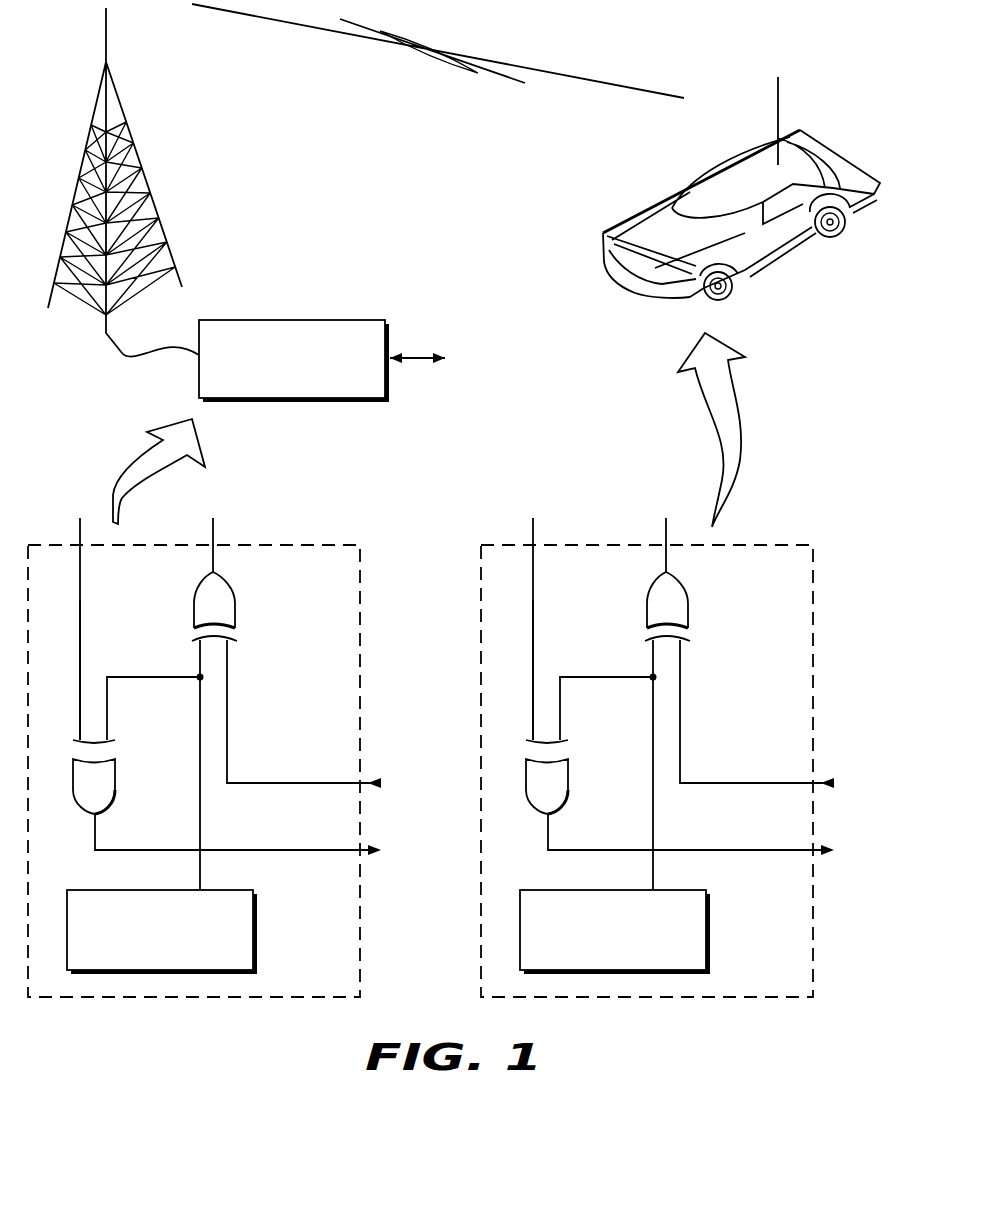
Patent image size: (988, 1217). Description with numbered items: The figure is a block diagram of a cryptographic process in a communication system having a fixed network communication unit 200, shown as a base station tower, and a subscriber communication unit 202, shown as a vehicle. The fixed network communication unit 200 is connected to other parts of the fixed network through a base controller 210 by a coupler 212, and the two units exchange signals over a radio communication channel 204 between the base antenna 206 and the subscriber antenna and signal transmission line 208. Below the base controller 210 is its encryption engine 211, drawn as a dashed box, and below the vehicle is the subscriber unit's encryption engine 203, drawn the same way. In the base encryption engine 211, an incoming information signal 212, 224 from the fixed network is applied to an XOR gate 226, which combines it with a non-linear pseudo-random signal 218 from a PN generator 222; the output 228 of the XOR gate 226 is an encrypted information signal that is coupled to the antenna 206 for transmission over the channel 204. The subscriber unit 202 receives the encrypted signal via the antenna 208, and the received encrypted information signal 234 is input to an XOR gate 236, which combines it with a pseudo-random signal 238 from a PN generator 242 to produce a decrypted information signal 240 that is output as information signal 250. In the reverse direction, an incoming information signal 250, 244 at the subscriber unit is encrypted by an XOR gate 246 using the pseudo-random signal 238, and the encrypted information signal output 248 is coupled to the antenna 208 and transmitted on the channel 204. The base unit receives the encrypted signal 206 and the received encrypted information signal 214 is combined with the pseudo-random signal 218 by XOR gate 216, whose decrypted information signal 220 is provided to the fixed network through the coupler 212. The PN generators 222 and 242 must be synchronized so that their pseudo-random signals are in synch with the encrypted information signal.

The fixed network communication unit 200 is at (168, 136).
The subscriber communication unit 202 is at (697, 176).
The encryption engine 203 is at (813, 614).
The radio communication channel 204 is at (568, 68).
The antenna 206 is at (106, 62).
The antenna and signal transmission line 208 is at (776, 113).
The base controller 210 is at (253, 320).
The encryption engine 211 is at (360, 614).
The coupler 212 is at (415, 350).
The received encrypted information signal 214 is at (82, 592).
The XOR gate 216 is at (117, 797).
The pseudo-random signal 218 is at (162, 678).
The decrypted information signal 220 is at (325, 850).
The PN generator 222 is at (127, 890).
The incoming information signal 224 is at (313, 783).
The XOR gate 226 is at (194, 593).
The encrypted information signal 228 is at (214, 557).
The received encrypted information signal 234 is at (535, 592).
The XOR gate 236 is at (570, 797).
The pseudo-random signal 238 is at (615, 678).
The decrypted information signal 240 is at (778, 850).
The PN generator 242 is at (580, 890).
The incoming information signal 244 is at (766, 783).
The XOR gate 246 is at (647, 593).
The encrypted information signal output 248 is at (667, 557).
The information signal 250 is at (834, 783).